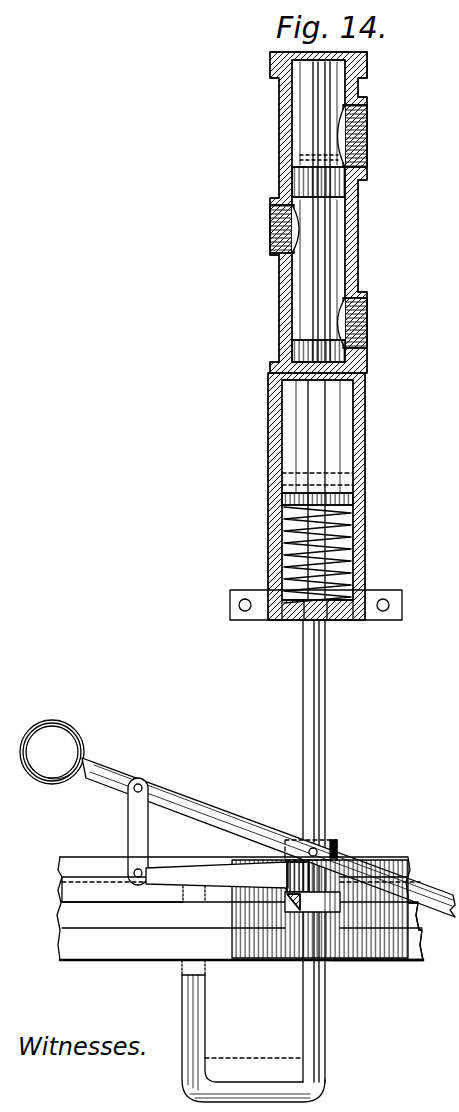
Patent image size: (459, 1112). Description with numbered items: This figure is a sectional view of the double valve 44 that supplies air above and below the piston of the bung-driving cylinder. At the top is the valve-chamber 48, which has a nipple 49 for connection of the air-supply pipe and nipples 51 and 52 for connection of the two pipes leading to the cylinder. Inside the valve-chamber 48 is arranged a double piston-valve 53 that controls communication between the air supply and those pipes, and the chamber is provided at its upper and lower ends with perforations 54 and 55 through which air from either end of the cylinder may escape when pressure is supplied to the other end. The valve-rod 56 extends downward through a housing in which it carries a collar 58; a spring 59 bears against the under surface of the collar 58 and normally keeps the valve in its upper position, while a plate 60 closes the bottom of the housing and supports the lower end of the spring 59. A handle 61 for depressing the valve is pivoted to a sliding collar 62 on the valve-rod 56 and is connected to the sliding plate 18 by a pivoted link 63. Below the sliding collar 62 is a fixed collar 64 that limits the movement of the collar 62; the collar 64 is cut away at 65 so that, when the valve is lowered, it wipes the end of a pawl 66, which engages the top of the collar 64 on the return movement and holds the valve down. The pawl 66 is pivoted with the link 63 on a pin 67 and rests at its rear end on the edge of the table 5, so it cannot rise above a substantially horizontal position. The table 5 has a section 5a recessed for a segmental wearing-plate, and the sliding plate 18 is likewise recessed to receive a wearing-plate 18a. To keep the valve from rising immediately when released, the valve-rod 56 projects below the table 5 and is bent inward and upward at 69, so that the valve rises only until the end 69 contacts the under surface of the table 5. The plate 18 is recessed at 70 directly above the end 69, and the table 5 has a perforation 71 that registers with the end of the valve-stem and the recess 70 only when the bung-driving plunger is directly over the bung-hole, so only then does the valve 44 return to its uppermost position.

The valve-chamber 48 is at (279, 106).
The perforation 54 is at (367, 60).
The nipple 51 is at (367, 140).
The nipple 49 is at (270, 226).
The nipple 52 is at (367, 316).
The double piston-valve 53 is at (292, 172).
The double valve 44 is at (312, 288).
The perforation 55 is at (268, 400).
The collar 58 is at (282, 498).
The spring 59 is at (353, 540).
The plate 60 is at (294, 620).
The valve-rod 56 is at (325, 712).
The handle 61 is at (216, 803).
The pivoted link 63 is at (140, 842).
The sliding collar 62 is at (336, 846).
The sliding plate 18 is at (403, 858).
The wearing-plate 18a is at (62, 893).
The pin 67 is at (122, 891).
The recess 70 is at (186, 893).
The pawl 66 is at (227, 882).
The fixed collar 64 is at (340, 906).
The cut-away 65 is at (290, 906).
The table section 5a is at (418, 920).
The table 5 is at (423, 947).
The perforation 71 is at (406, 962).
The bent end 69 is at (188, 1020).